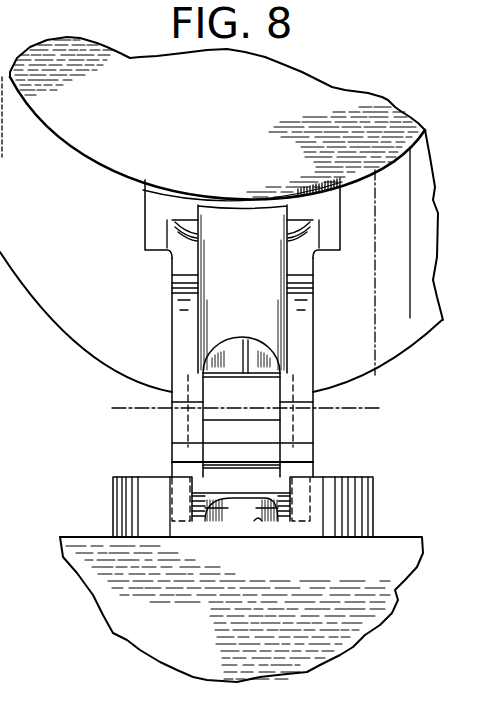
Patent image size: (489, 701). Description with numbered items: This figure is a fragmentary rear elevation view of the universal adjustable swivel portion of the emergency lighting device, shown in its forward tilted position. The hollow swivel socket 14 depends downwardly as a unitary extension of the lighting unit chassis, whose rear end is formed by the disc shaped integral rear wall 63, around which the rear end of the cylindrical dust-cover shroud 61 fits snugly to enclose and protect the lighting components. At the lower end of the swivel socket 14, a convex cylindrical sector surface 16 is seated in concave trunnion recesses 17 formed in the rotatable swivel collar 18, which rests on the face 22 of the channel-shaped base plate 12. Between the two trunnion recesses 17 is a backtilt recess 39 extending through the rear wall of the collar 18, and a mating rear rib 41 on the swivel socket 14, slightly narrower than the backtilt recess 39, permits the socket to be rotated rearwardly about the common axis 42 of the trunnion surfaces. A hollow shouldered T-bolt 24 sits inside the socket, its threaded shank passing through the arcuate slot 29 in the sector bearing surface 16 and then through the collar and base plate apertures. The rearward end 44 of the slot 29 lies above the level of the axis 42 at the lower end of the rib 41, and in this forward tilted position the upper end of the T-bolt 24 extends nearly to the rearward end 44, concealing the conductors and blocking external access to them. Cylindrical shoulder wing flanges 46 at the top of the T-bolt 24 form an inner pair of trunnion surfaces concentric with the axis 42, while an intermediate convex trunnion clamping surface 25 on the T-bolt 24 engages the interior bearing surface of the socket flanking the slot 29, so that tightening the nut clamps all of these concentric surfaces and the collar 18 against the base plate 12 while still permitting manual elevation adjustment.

The channel-shaped base plate 12 is at (193, 630).
The hollow swivel socket 14 is at (172, 297).
The convex cylindrical sector surface 16 is at (300, 456).
The concave trunnion recesses 17 is at (182, 486).
The rotatable swivel collar 18 is at (113, 482).
The face of base plate 22 is at (90, 537).
The hollow shouldered T-bolt 24 is at (218, 387).
The intermediate trunnion clamping surface 25 is at (253, 440).
The arcuate slot 29 is at (273, 392).
The backtilt recess 39 is at (265, 522).
The rear rib 41 is at (255, 270).
The common axis 42 is at (372, 405).
The rearward end of slot 44 is at (237, 338).
The cylindrical shoulder wing flanges 46 is at (182, 419).
The dust-cover shroud 61 is at (66, 334).
The disc shaped integral rear wall 63 is at (200, 129).